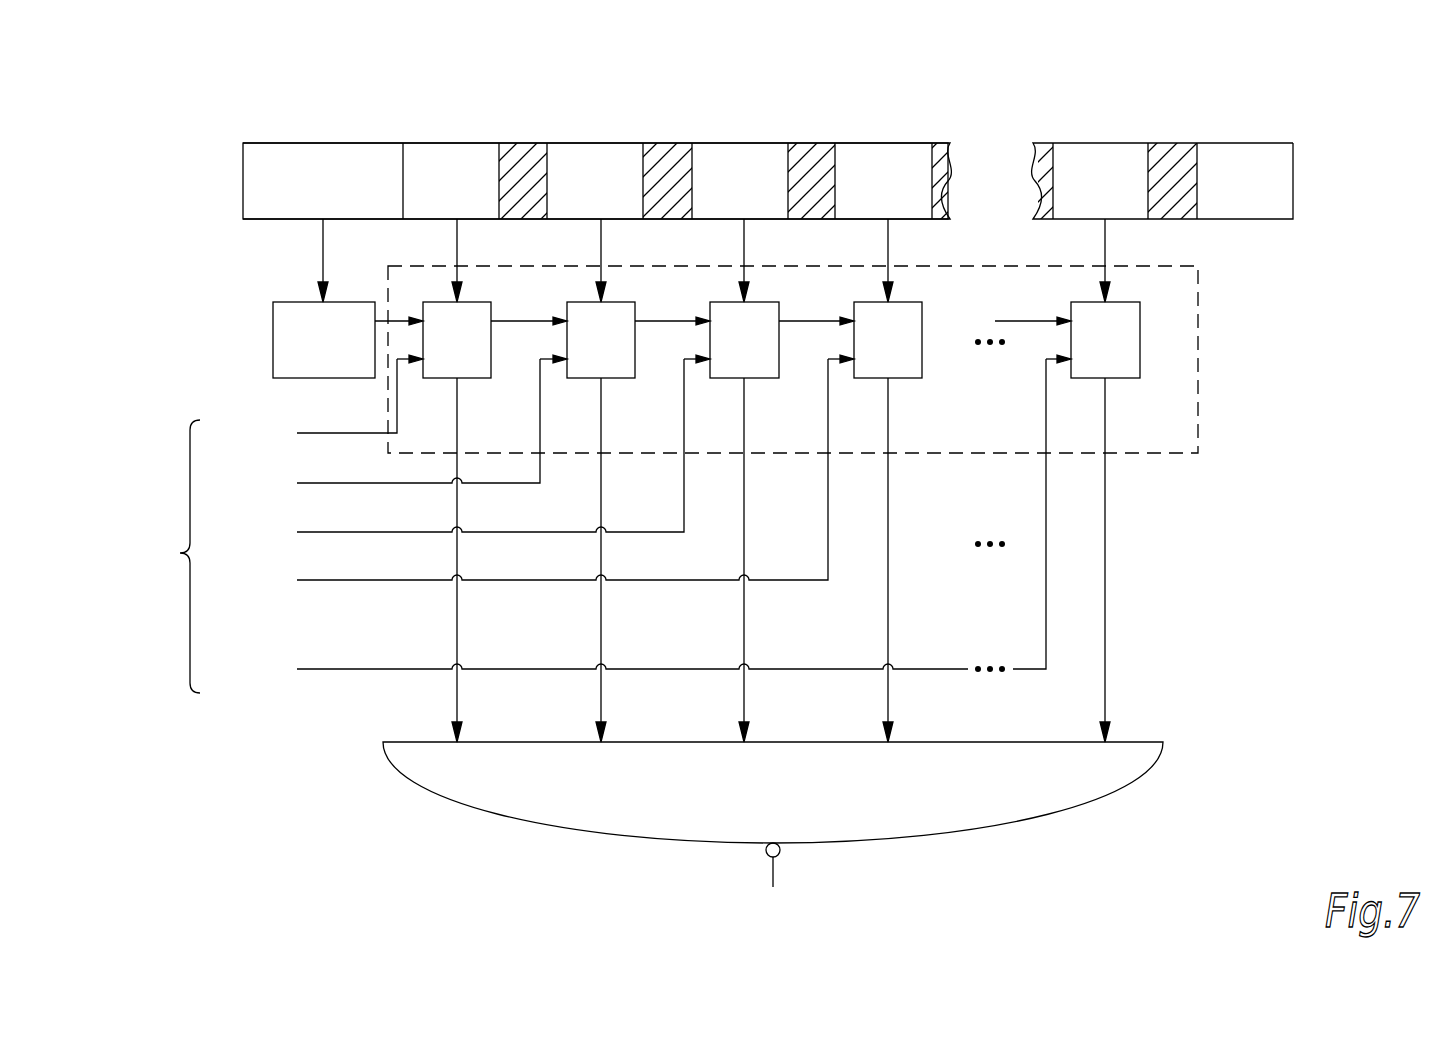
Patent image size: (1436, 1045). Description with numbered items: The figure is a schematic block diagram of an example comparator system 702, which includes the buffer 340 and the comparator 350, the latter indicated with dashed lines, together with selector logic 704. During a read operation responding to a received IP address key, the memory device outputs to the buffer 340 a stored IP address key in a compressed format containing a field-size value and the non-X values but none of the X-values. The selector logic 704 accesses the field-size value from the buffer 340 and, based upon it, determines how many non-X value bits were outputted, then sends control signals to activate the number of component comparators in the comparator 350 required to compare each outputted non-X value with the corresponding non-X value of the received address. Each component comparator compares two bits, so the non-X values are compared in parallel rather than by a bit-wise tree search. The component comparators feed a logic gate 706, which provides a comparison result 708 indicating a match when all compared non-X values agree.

The comparator system 702 is at (1368, 64).
The buffer 340 is at (322, 143).
The selector logic 704 is at (273, 320).
The comparator 350 is at (1198, 295).
The logic gate 706 is at (405, 779).
The comparison result 708 is at (777, 872).